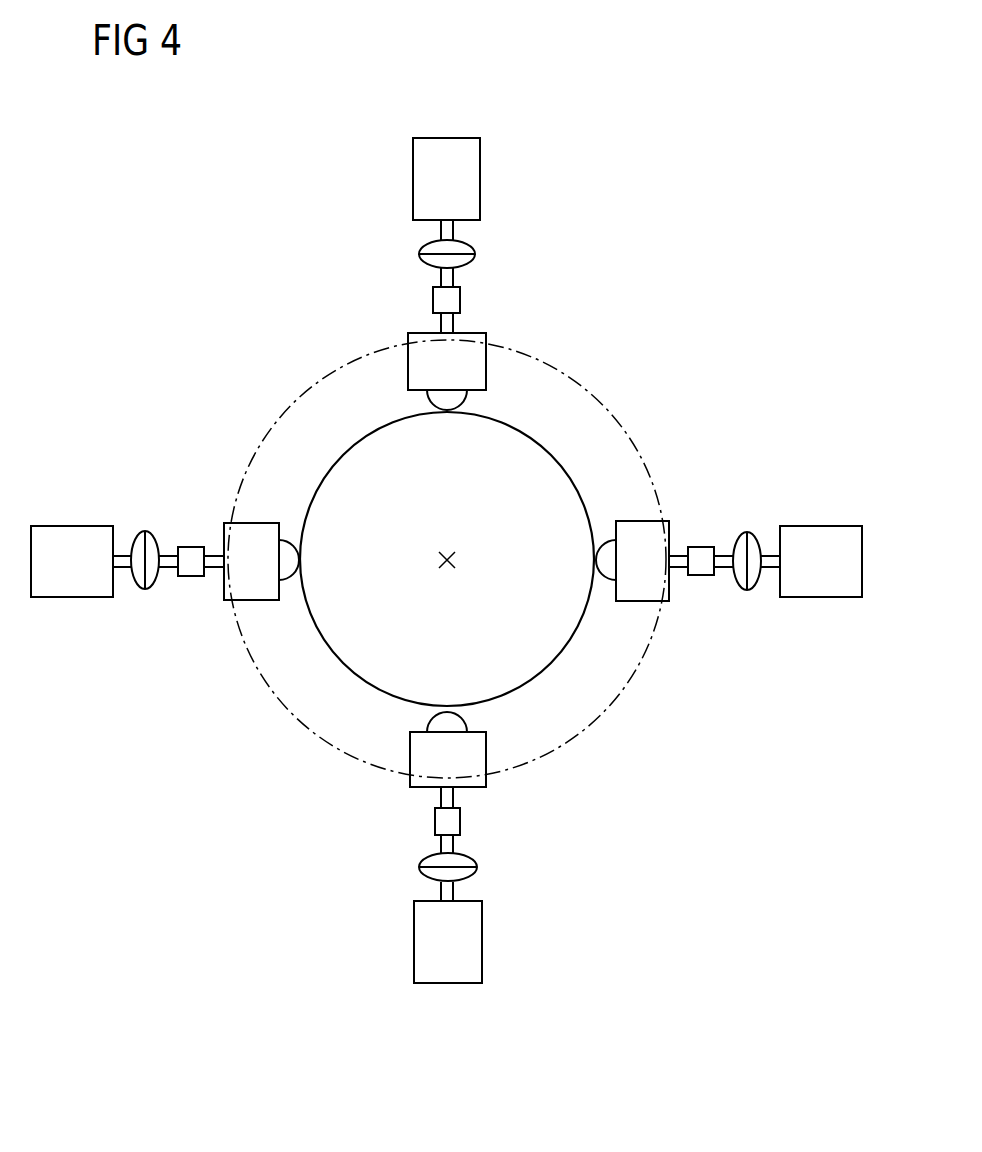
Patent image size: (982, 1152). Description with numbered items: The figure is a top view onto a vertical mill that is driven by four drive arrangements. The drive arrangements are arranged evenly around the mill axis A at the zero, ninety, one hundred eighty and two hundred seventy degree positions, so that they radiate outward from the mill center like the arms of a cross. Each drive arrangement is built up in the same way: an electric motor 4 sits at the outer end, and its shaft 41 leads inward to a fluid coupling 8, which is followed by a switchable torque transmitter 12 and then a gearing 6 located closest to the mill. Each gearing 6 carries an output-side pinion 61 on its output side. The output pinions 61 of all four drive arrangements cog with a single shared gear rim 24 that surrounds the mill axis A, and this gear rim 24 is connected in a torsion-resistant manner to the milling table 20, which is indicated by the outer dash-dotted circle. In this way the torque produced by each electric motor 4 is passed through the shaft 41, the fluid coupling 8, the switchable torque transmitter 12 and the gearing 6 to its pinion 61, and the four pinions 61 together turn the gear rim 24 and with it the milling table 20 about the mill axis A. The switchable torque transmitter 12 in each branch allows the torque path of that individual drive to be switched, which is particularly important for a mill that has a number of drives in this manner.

The electric motor 4 is at (470, 175).
The gearing 6 is at (417, 758).
The fluid coupling 8 is at (465, 875).
The switchable torque transmitter 12 is at (453, 300).
The milling table 20 is at (553, 363).
The gear rim 24 is at (570, 470).
The shaft 41 is at (440, 890).
The output-side pinion 61 is at (455, 722).
The mill axis A is at (449, 558).